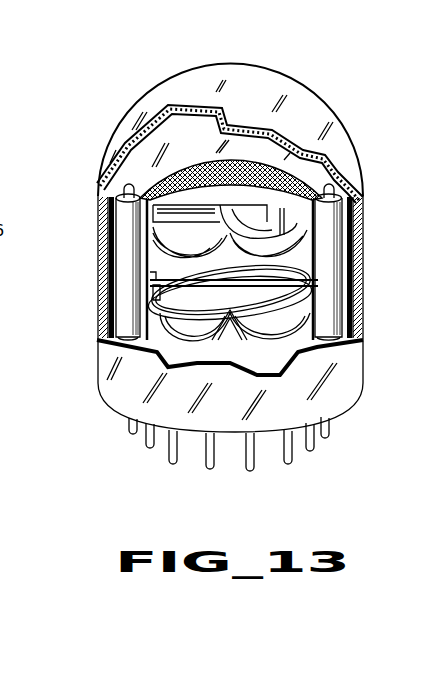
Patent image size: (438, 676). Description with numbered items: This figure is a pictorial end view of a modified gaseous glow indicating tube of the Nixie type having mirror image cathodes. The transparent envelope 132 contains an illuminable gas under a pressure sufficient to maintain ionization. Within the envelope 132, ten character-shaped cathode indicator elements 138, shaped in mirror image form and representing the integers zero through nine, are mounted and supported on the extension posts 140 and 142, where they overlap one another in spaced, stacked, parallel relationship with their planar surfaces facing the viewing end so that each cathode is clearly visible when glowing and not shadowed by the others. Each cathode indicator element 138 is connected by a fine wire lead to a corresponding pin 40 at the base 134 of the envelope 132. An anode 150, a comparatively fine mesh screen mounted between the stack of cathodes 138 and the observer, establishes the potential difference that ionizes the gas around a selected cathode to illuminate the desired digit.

The transparent envelope 132 is at (308, 95).
The base 134 is at (98, 392).
The cathode indicator elements 138 is at (277, 340).
The extension post 140 is at (123, 278).
The extension post 142 is at (333, 288).
The anode 150 is at (200, 161).
The pin 40 is at (205, 460).